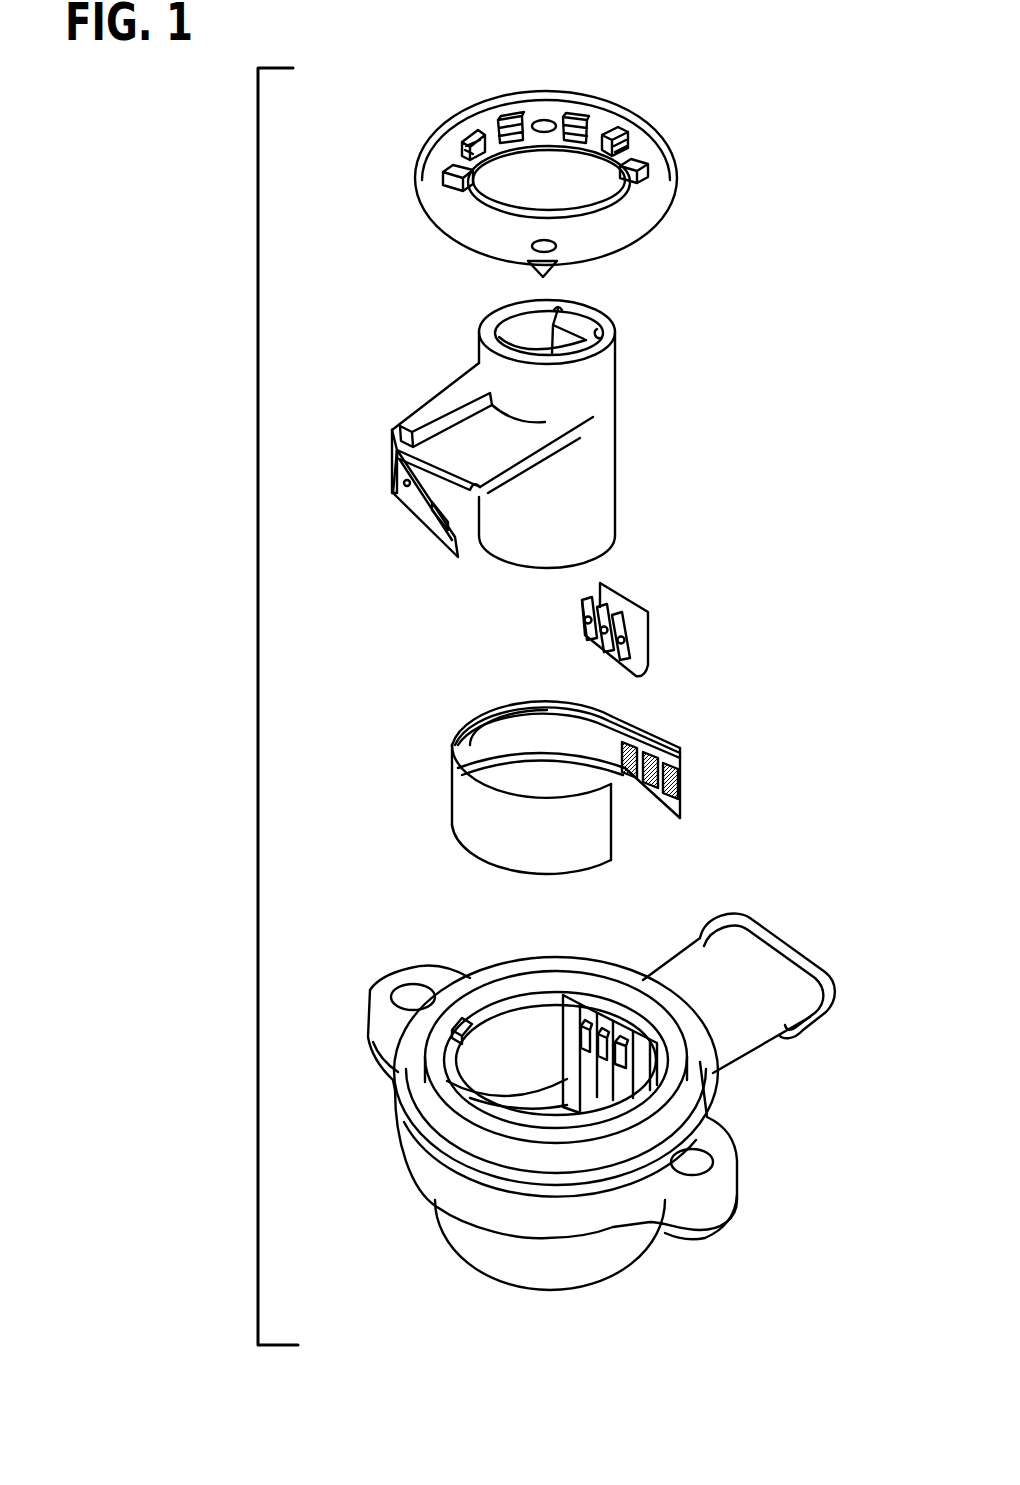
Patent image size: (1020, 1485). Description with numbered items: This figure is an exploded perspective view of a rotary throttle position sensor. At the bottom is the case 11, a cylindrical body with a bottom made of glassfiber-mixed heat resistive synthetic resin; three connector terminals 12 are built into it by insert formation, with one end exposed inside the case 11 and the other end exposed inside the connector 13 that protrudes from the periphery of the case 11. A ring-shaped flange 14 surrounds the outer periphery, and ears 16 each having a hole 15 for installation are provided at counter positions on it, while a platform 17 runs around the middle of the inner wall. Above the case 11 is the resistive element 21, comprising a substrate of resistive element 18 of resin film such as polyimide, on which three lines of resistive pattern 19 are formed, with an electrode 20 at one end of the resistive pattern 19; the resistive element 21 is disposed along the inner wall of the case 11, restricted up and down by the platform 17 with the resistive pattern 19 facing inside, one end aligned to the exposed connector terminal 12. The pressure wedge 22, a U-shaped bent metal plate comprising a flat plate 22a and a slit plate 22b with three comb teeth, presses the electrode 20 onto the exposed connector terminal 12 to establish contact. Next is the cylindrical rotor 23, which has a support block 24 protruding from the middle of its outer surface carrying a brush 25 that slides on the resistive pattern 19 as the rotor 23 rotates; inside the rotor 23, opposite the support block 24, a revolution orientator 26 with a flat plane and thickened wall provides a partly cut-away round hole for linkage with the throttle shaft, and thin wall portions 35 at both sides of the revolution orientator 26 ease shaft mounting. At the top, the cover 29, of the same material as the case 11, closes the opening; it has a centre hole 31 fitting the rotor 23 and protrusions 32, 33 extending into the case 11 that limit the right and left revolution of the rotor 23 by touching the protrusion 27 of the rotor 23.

The case 11 is at (463, 1227).
The connector terminal 12 is at (626, 1043).
The connector 13 is at (748, 1032).
The flange 14 is at (430, 1173).
The hole 15 is at (415, 995).
The ear 16 is at (387, 983).
The platform 17 is at (515, 1078).
The substrate of resistive element 18 is at (602, 738).
The resistive pattern 19 is at (503, 760).
The electrode 20 is at (633, 790).
The resistive element 21 is at (488, 817).
The pressure wedge 22 is at (629, 622).
The contact base plate 22a is at (642, 660).
The slit plate 22b is at (590, 648).
The rotor 23 is at (615, 433).
The support block 24 is at (508, 447).
The brush 25 is at (433, 500).
The revolution orientator 26 is at (573, 347).
The protrusion 27 is at (447, 418).
The cover 29 is at (640, 230).
The centre hole 31 is at (513, 198).
The protrusion 32 is at (645, 162).
The protrusion 33 is at (450, 190).
The thin wall portion 35 is at (558, 308).